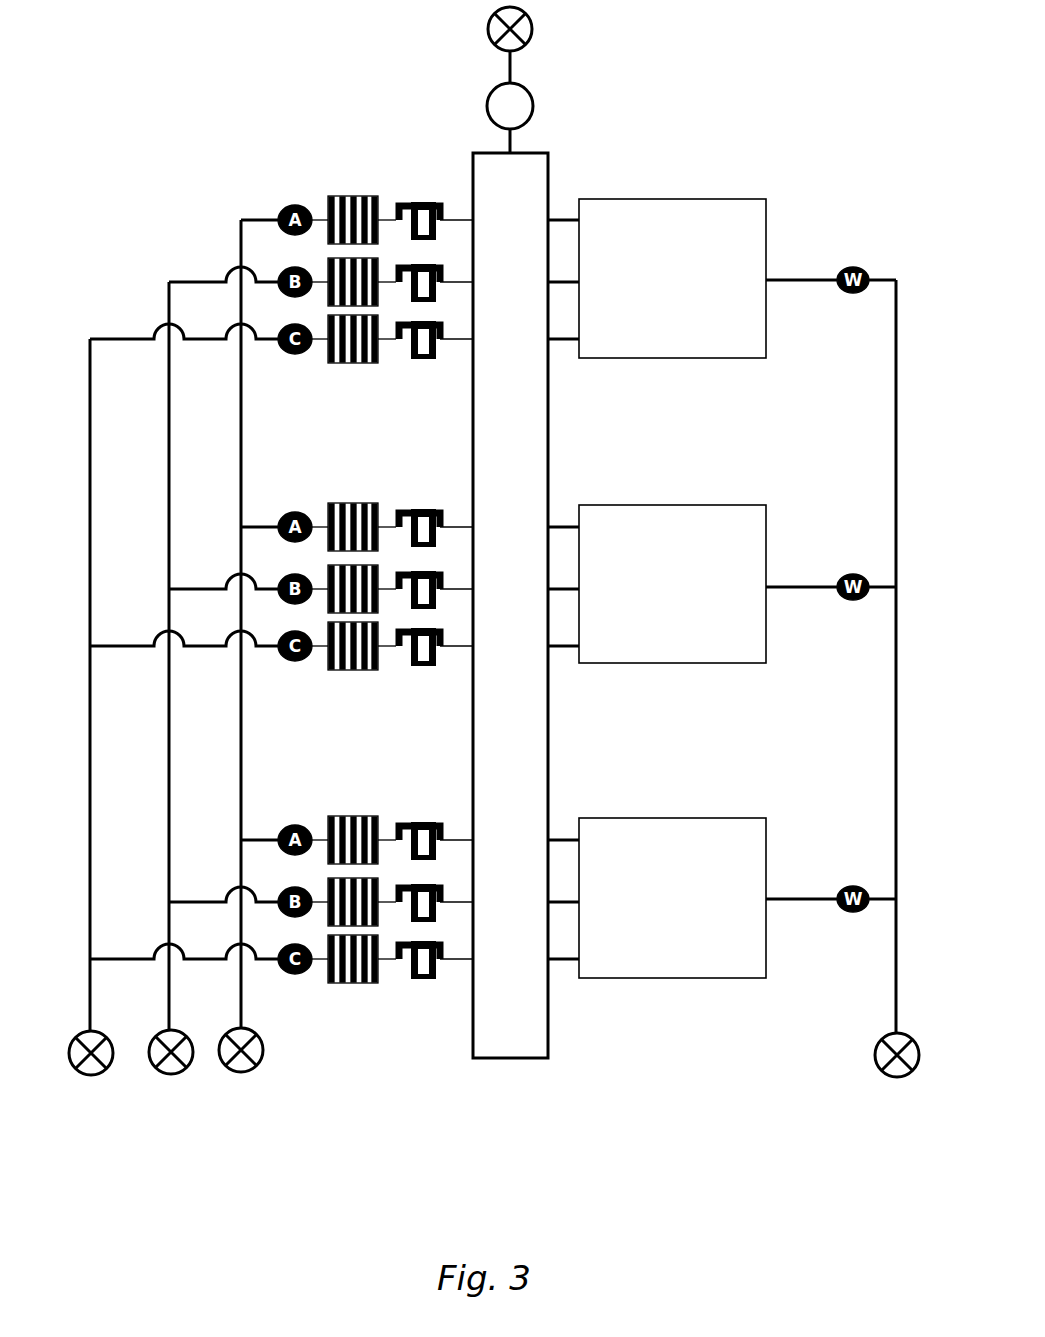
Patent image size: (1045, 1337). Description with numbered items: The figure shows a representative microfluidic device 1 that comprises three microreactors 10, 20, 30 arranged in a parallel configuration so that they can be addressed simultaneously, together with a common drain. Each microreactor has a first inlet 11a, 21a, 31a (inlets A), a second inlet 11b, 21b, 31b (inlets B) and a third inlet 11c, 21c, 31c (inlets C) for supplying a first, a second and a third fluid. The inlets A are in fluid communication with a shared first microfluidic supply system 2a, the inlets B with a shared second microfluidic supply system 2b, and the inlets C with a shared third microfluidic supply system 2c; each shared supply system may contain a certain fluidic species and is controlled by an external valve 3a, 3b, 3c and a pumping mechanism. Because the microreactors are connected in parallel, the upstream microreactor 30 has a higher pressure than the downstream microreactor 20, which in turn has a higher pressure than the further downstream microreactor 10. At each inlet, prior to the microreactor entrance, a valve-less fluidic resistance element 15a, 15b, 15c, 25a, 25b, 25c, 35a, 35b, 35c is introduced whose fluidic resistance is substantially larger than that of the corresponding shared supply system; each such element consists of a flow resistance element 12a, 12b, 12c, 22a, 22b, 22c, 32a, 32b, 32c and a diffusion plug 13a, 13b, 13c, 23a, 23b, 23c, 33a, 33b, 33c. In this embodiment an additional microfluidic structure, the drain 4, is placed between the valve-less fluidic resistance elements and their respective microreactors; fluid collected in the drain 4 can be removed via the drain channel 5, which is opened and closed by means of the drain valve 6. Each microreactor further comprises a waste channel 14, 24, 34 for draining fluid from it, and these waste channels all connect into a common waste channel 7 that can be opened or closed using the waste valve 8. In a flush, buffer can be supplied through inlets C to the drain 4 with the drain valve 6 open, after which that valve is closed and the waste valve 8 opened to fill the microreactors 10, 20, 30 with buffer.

The microfluidic device 1 is at (194, 64).
The shared first microfluidic supply system 2a is at (239, 1014).
The shared second microfluidic supply system 2b is at (168, 1014).
The shared third microfluidic supply system 2c is at (88, 1014).
The external valve 3a is at (242, 1072).
The external valve 3b is at (172, 1074).
The external valve 3c is at (92, 1075).
The drain 4 is at (510, 605).
The drain channel 5 is at (512, 66).
The drain valve 6 is at (488, 30).
The common waste channel 7 is at (897, 745).
The waste valve 8 is at (875, 1058).
The microreactor 10 is at (657, 278).
The microreactor 20 is at (657, 584).
The microreactor 30 is at (657, 898).
The first inlet 11a is at (268, 205).
The second inlet 11b is at (207, 280).
The third inlet 11c is at (130, 337).
The flow resistance element 12a is at (337, 188).
The flow resistance element 12b is at (334, 292).
The flow resistance element 12c is at (349, 364).
The diffusion plug 13a is at (412, 195).
The diffusion plug 13b is at (432, 290).
The diffusion plug 13c is at (417, 362).
The waste channel 14 is at (818, 278).
The waste channel 24 is at (822, 585).
The waste channel 34 is at (822, 896).
The valve-less fluidic resistance element 15a is at (314, 183).
The valve-less fluidic resistance element 15b is at (310, 252).
The valve-less fluidic resistance element 15c is at (310, 312).
The first inlet 21a is at (258, 490).
The second inlet 21b is at (223, 553).
The third inlet 21c is at (184, 609).
The flow resistance element 22a is at (354, 492).
The flow resistance element 22b is at (329, 632).
The flow resistance element 22c is at (354, 678).
The diffusion plug 23a is at (429, 492).
The diffusion plug 23b is at (439, 652).
The diffusion plug 23c is at (429, 680).
The valve-less fluidic resistance element 25a is at (255, 474).
The valve-less fluidic resistance element 25b is at (215, 534).
The valve-less fluidic resistance element 25c is at (176, 588).
The first inlet 31a is at (258, 803).
The second inlet 31b is at (223, 866).
The third inlet 31c is at (184, 922).
The flow resistance element 32a is at (354, 805).
The flow resistance element 32b is at (329, 945).
The flow resistance element 32c is at (354, 991).
The diffusion plug 33a is at (429, 805).
The diffusion plug 33b is at (439, 963).
The diffusion plug 33c is at (429, 993).
The valve-less fluidic resistance element 35a is at (255, 787).
The valve-less fluidic resistance element 35b is at (215, 847).
The valve-less fluidic resistance element 35c is at (176, 901).